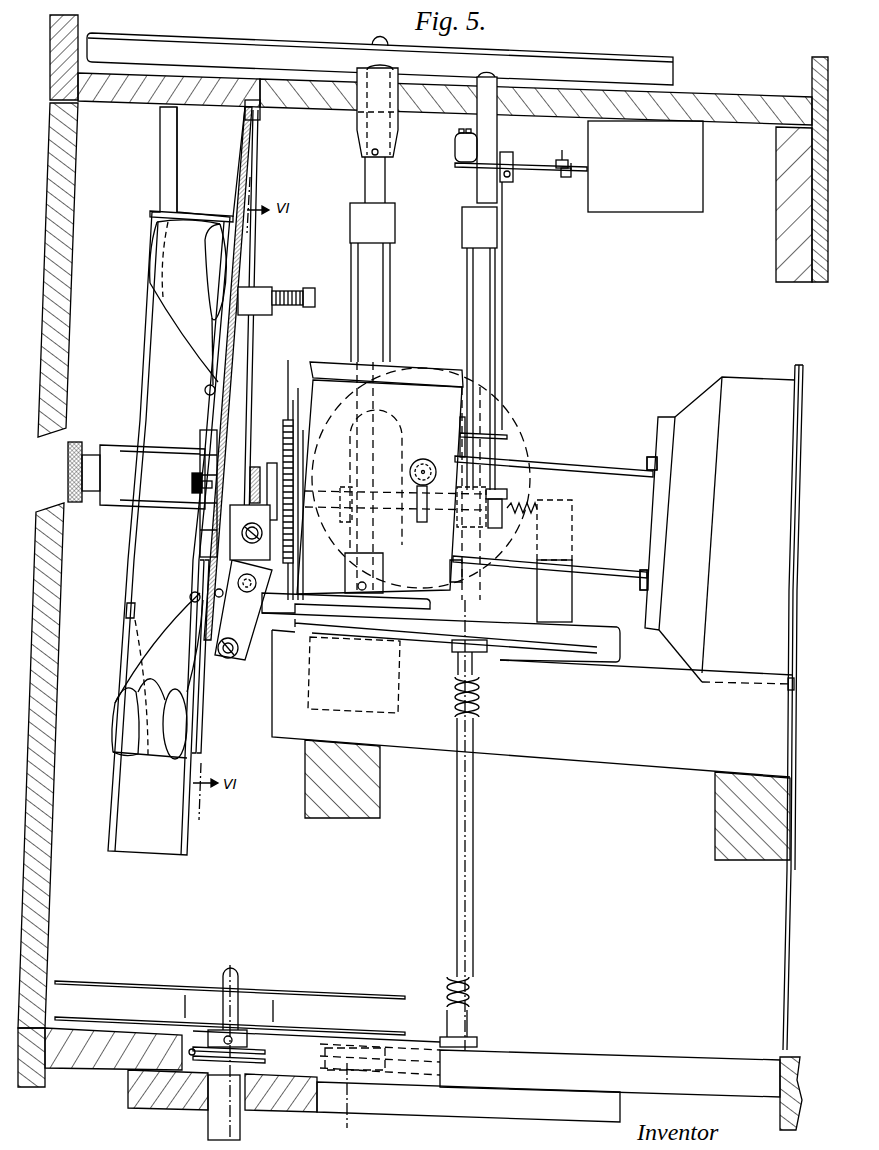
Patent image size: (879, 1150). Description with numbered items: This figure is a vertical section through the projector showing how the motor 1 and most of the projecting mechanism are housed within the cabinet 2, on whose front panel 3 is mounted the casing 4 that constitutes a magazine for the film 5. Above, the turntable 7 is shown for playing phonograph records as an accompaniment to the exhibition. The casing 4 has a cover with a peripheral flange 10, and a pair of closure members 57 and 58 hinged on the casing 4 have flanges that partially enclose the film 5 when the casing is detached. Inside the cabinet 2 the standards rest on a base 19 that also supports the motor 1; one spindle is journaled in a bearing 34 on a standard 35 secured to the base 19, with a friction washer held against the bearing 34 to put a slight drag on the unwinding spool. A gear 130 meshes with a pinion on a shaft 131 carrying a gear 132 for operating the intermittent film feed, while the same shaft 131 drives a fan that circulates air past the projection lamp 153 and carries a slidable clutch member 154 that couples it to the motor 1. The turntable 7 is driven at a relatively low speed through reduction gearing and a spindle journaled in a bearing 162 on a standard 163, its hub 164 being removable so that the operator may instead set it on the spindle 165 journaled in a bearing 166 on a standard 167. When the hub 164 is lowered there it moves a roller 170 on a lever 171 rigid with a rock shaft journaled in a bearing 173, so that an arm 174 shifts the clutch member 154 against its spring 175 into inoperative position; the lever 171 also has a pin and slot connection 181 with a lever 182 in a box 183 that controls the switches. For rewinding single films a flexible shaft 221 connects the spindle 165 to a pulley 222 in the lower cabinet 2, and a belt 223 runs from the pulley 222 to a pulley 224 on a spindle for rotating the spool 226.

The motor 1 is at (513, 447).
The cabinet 2 is at (817, 70).
The front panel 3 is at (247, 143).
The casing 4 is at (211, 162).
The film 5 is at (177, 257).
The turntable 7 is at (673, 72).
The peripheral flange 10 is at (163, 162).
The base 19 is at (588, 625).
The bearing 34 is at (257, 293).
The standard 35 is at (249, 388).
The closure member 57 is at (152, 223).
The closure member 58 is at (123, 663).
The gear 130 is at (287, 428).
The shaft 131 is at (420, 505).
The gear 132 is at (256, 467).
The projection lamp 153 is at (400, 427).
The clutch member 154 is at (464, 577).
The bearing 162 is at (387, 222).
The standard 163 is at (388, 290).
The hub 164 is at (360, 118).
The spindle 165 is at (490, 133).
The bearing 166 is at (463, 233).
The standard 167 is at (468, 305).
The roller 170 is at (455, 147).
The lever 171 is at (540, 168).
The bearing 173 is at (505, 435).
The arm 174 is at (503, 488).
The spring 175 is at (500, 530).
The pin and slot connection 181 is at (573, 178).
The lever 182 is at (567, 160).
The box 183 is at (652, 212).
The flexible shaft 221 is at (470, 981).
The pulley 222 is at (507, 1048).
The belt 223 is at (355, 1097).
The pulley 224 is at (192, 1053).
The spool 226 is at (113, 987).